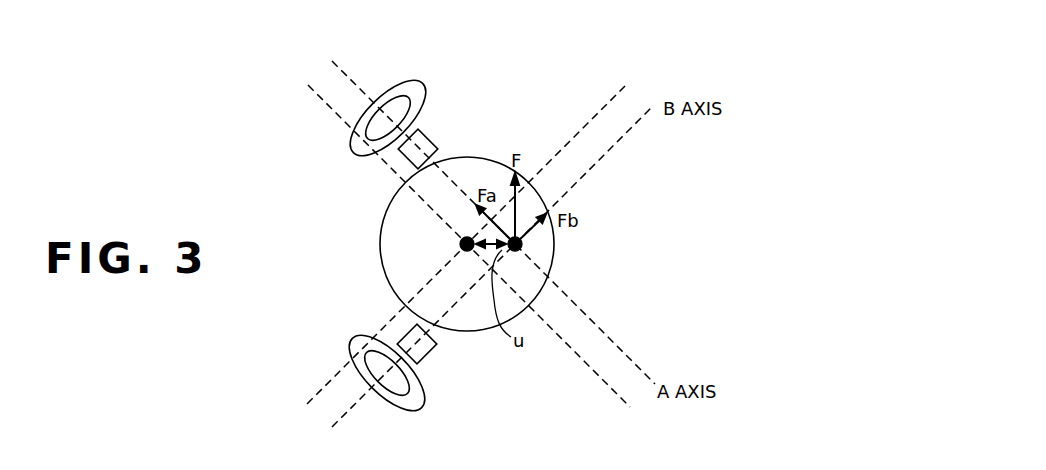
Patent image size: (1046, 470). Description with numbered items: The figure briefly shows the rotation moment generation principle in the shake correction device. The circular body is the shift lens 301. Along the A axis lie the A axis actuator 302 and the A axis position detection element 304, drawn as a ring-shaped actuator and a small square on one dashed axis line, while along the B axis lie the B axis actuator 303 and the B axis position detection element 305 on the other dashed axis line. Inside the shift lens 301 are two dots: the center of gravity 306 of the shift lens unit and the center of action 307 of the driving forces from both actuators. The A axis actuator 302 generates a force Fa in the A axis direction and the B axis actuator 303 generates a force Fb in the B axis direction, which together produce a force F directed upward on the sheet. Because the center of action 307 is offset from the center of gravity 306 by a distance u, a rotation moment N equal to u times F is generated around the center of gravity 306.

The shift lens 301 is at (463, 330).
The actuator in the A axis direction 302 is at (350, 147).
The actuator in the B axis direction 303 is at (347, 352).
The position detection element in the A axis direction 304 is at (437, 143).
The position detection element in the B axis direction 305 is at (402, 336).
The center of gravity of the shift lens unit 306 is at (460, 243).
The center of action of driving forces 307 is at (523, 241).